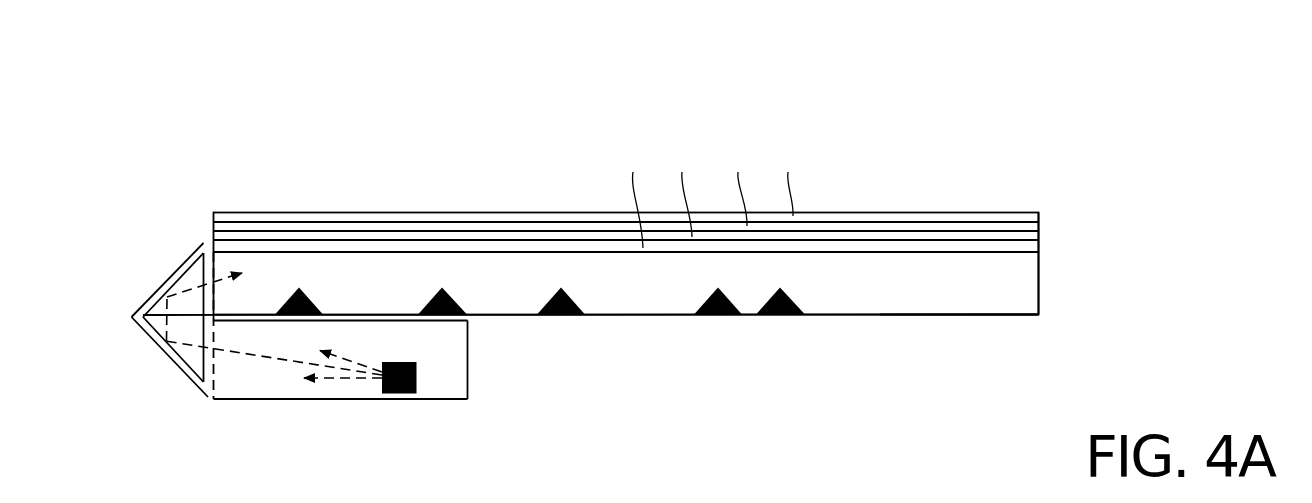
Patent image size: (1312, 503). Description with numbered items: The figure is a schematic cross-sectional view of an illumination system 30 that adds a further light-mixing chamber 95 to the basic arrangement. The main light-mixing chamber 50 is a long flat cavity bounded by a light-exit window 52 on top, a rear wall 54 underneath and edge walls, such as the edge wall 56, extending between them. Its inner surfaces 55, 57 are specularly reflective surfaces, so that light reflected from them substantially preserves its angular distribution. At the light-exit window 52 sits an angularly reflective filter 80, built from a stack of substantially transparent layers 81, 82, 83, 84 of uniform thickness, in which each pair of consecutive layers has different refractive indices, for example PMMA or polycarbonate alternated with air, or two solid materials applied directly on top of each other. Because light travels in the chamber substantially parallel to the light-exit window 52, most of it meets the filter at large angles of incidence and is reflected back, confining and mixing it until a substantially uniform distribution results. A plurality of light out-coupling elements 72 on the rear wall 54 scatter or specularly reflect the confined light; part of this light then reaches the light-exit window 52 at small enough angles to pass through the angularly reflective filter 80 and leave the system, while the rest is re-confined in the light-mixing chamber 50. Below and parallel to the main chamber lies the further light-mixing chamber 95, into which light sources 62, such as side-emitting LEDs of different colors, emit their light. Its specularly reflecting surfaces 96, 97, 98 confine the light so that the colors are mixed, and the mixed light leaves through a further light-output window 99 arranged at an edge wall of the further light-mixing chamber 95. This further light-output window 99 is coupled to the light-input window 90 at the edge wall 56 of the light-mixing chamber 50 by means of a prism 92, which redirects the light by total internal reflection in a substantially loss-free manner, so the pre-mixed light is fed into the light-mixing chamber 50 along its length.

The illumination system 30 is at (952, 110).
The light-mixing chamber 50 is at (860, 290).
The light-exit window 52 is at (994, 257).
The rear wall 54 is at (657, 316).
The inner surface 55 is at (926, 310).
The edge wall 56 is at (1040, 260).
The inner surface 57 is at (1033, 293).
The light source 62 is at (392, 394).
The light out-coupling elements 72 is at (562, 316).
The angularly reflective filter 80 is at (594, 198).
The transparent layer 81 is at (242, 248).
The transparent layer 82 is at (289, 237).
The transparent layer 83 is at (340, 226).
The transparent layer 84 is at (387, 216).
The light-input window 90 is at (216, 278).
The prism 92 is at (176, 333).
The further light-mixing chamber 95 is at (372, 357).
The specularly reflecting surface 96 is at (270, 392).
The specularly reflecting surface 97 is at (462, 386).
The specularly reflecting surface 98 is at (437, 325).
The further light-output window 99 is at (214, 373).